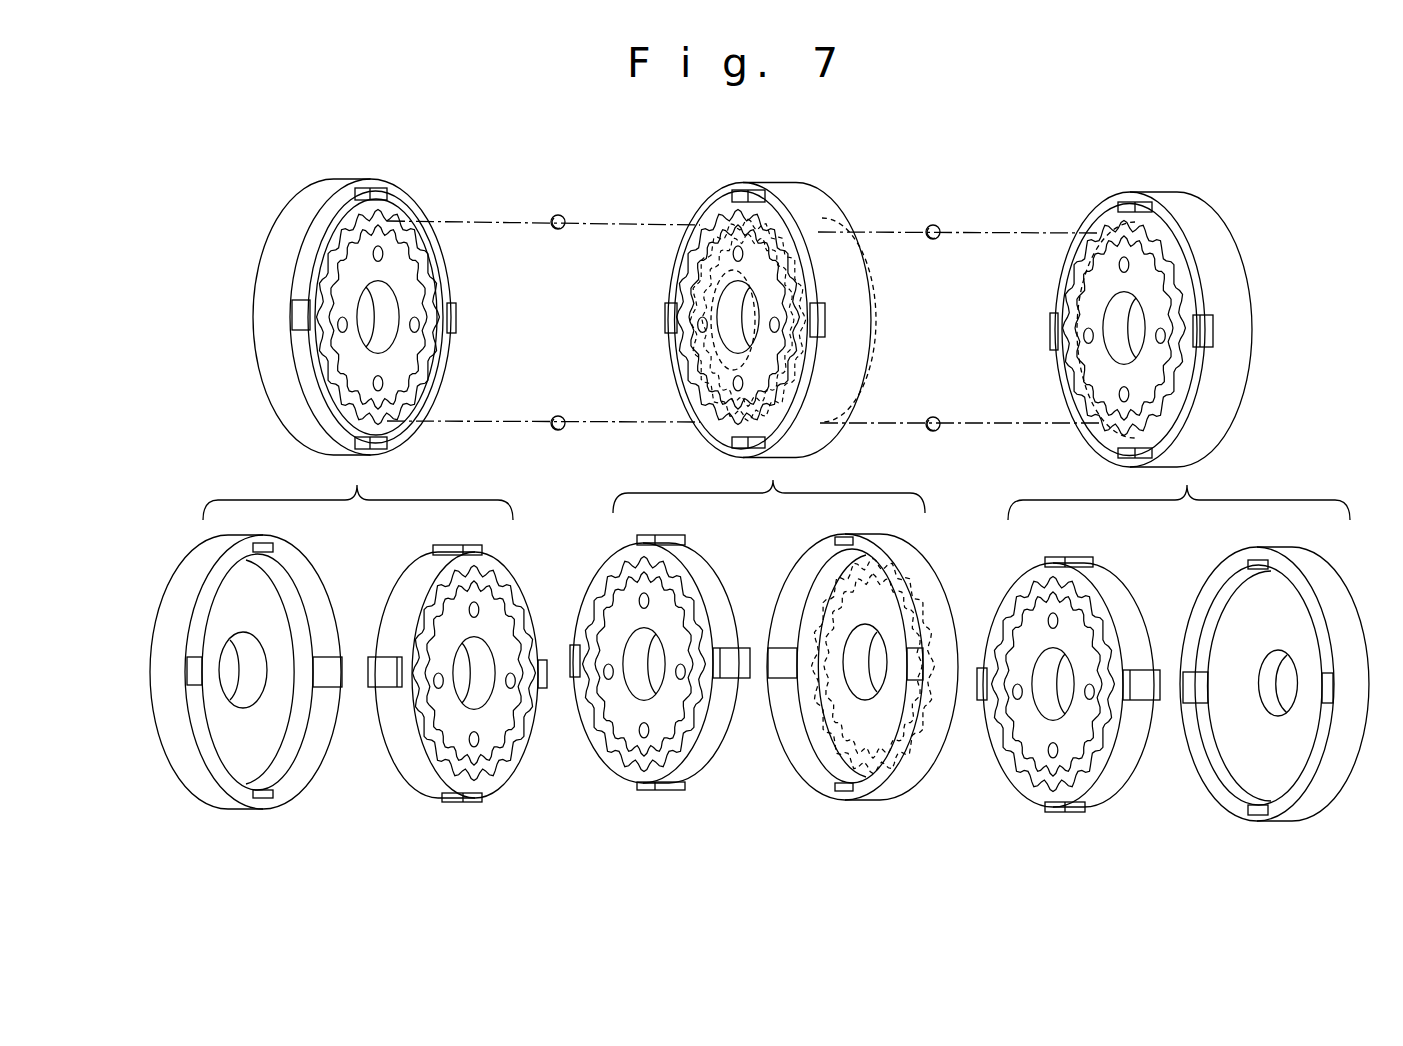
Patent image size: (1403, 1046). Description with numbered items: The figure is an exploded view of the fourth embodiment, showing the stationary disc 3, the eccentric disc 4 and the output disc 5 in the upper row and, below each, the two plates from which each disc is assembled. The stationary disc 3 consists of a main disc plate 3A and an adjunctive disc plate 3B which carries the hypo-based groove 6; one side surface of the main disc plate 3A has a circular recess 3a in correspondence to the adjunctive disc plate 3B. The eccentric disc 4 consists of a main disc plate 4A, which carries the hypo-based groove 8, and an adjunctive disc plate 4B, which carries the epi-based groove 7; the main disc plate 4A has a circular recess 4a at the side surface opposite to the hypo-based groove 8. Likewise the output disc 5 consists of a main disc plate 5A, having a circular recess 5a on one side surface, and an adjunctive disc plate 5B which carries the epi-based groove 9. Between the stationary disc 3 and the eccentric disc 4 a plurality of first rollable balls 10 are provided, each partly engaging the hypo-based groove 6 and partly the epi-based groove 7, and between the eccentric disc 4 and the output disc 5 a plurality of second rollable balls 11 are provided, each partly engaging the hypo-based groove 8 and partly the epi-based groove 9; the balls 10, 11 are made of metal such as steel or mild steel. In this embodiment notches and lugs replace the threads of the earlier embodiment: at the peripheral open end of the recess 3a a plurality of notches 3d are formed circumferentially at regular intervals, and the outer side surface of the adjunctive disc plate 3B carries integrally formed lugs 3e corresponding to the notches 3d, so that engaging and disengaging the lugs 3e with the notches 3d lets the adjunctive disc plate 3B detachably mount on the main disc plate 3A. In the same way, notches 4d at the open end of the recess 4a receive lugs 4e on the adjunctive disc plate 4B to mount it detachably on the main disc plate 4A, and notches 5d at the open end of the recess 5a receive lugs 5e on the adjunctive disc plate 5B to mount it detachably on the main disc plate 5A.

The stationary disc 3 is at (306, 168).
The main disc plate 3A is at (262, 272).
The adjunctive disc plate 3B is at (400, 253).
The circular recess 3a is at (287, 623).
The notches 3d is at (256, 552).
The lugs 3e is at (376, 190).
The eccentric disc 4 is at (731, 180).
The main disc plate 4A is at (823, 207).
The adjunctive disc plate 4B is at (710, 577).
The circular recess 4a is at (893, 603).
The notches 4d is at (845, 555).
The lugs 4e is at (746, 184).
The output disc 5 is at (1180, 182).
The main disc plate 5A is at (1227, 254).
The adjunctive disc plate 5B is at (1113, 587).
The circular recess 5a is at (1288, 605).
The notches 5d is at (1250, 575).
The lugs 5e is at (1127, 207).
The hypo-based groove 6 is at (443, 290).
The epi-based groove 7 is at (705, 228).
The hypo-based groove 8 is at (850, 297).
The epi-based groove 9 is at (1100, 240).
The first rollable balls 10 is at (559, 215).
The second rollable balls 11 is at (933, 225).